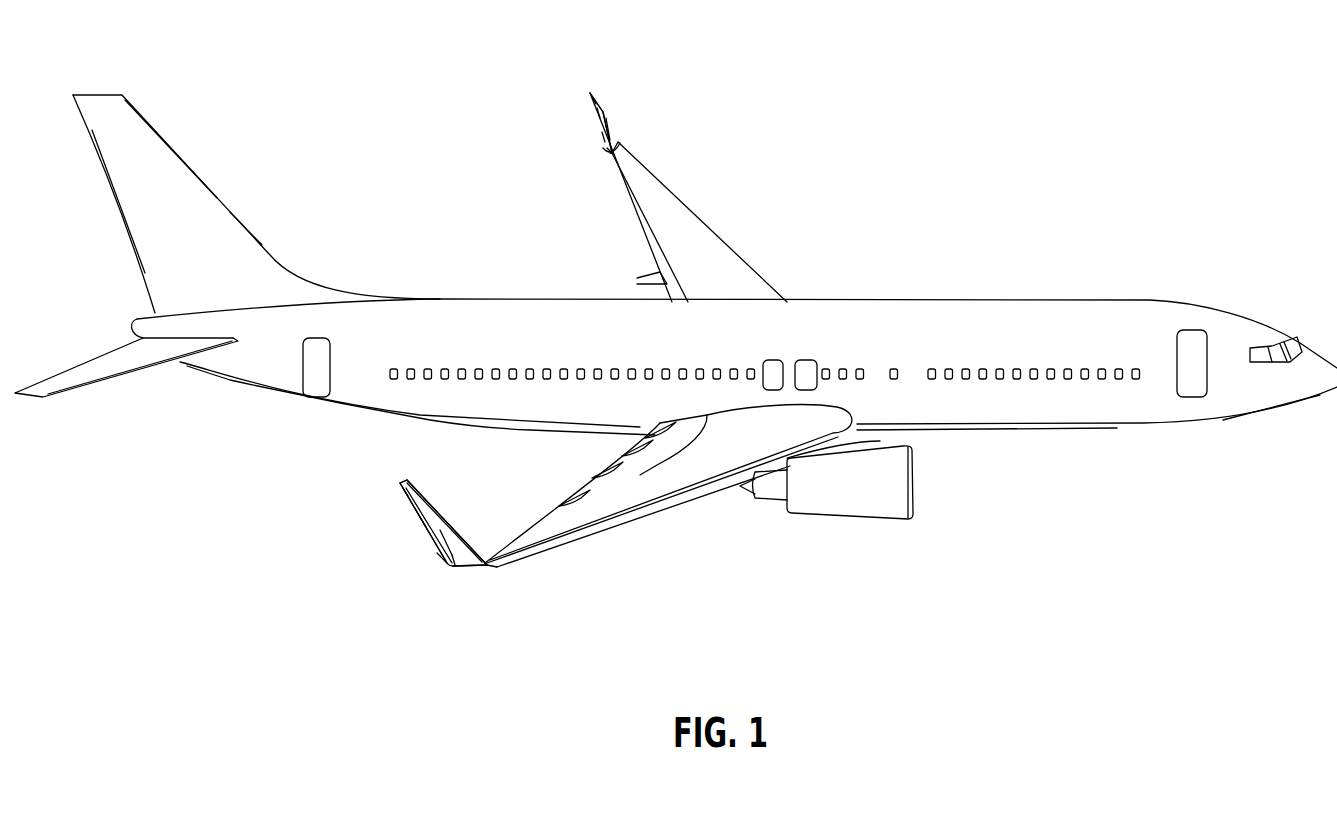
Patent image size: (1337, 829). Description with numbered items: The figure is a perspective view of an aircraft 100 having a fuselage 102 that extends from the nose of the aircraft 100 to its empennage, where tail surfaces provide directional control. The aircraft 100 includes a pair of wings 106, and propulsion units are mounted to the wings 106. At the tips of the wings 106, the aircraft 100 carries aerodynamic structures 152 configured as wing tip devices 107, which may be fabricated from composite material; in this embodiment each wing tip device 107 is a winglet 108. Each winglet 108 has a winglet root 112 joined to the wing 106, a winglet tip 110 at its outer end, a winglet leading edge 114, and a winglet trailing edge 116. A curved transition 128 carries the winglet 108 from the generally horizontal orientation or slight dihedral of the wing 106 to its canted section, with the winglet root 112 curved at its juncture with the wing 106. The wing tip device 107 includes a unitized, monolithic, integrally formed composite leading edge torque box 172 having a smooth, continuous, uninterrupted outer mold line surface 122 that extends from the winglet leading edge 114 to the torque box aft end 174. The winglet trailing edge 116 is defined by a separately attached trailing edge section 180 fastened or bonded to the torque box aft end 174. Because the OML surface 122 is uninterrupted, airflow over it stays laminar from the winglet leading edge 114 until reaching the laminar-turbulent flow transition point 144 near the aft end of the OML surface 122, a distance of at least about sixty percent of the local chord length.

The aircraft 100 is at (950, 298).
The fuselage 102 is at (1150, 298).
The wings 106 is at (750, 263).
The wing tip device 107 is at (593, 92).
The winglet 108 is at (603, 103).
The winglet tip 110 is at (590, 93).
The winglet root 112 is at (623, 153).
The winglet leading edge 114 is at (837, 503).
The winglet trailing edge 116 is at (607, 148).
The outer mold line surface 122 is at (622, 143).
The curved transition 128 is at (492, 567).
The laminar-turbulent flow transition point 144 is at (610, 153).
The aerodynamic structure 152 is at (592, 97).
The leading edge torque box 172 is at (610, 120).
The torque box aft end 174 is at (602, 132).
The trailing edge section 180 is at (597, 108).